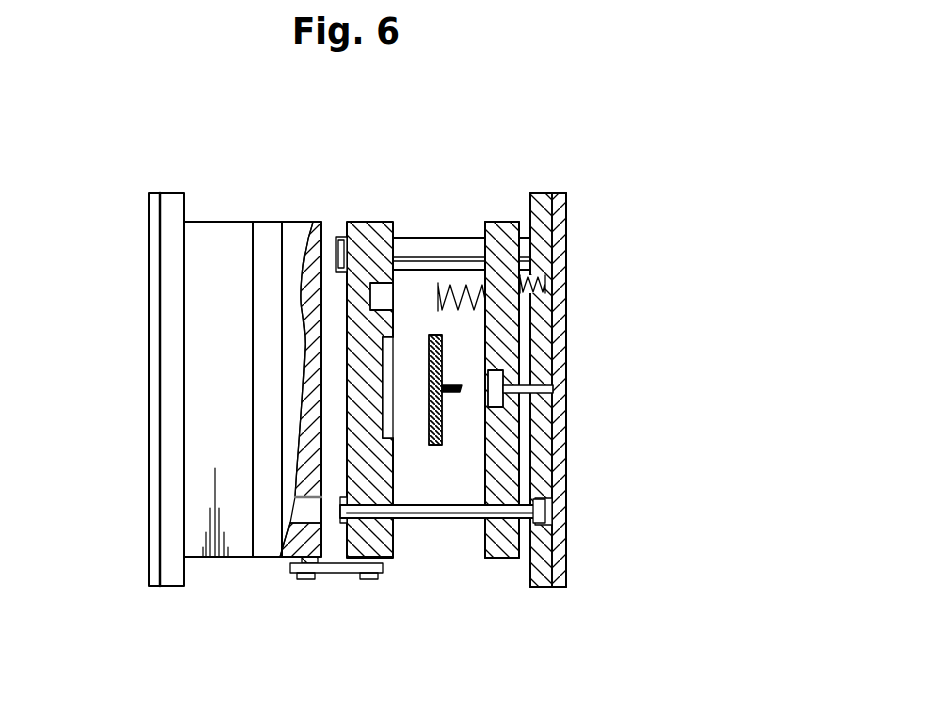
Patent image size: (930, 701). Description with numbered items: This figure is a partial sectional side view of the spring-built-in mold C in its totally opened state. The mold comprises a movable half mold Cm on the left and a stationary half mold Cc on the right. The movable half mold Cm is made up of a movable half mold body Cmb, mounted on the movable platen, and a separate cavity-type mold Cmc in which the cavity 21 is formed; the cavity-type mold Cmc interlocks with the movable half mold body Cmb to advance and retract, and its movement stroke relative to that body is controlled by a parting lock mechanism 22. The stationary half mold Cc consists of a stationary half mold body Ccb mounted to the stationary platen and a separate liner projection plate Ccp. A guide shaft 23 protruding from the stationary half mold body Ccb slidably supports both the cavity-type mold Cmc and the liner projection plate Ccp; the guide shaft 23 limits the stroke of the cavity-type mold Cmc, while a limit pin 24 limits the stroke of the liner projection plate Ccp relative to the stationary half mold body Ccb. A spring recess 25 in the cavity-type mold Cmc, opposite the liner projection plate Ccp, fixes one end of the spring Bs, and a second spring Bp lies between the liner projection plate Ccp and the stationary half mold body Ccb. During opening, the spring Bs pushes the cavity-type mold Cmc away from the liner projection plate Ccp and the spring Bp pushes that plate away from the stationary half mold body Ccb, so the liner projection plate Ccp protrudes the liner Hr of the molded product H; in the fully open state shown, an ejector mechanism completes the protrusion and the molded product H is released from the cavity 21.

The spring-built-in mold C is at (537, 150).
The movable half mold Cm is at (150, 293).
The movable half mold body Cmb is at (218, 220).
The cavity-type mold Cmc is at (395, 553).
The stationary half mold Cc is at (595, 526).
The stationary half mold body Ccb is at (547, 592).
The liner projection plate Ccp is at (505, 222).
The spring Bs is at (458, 268).
The spring Bp is at (533, 282).
The molded product H is at (443, 428).
The liner Hr is at (452, 385).
The cavity 21 is at (387, 427).
The parting lock mechanism 22 is at (338, 578).
The guide shaft 23 is at (410, 237).
The limit pin 24 is at (457, 520).
The spring recess 25 is at (380, 283).